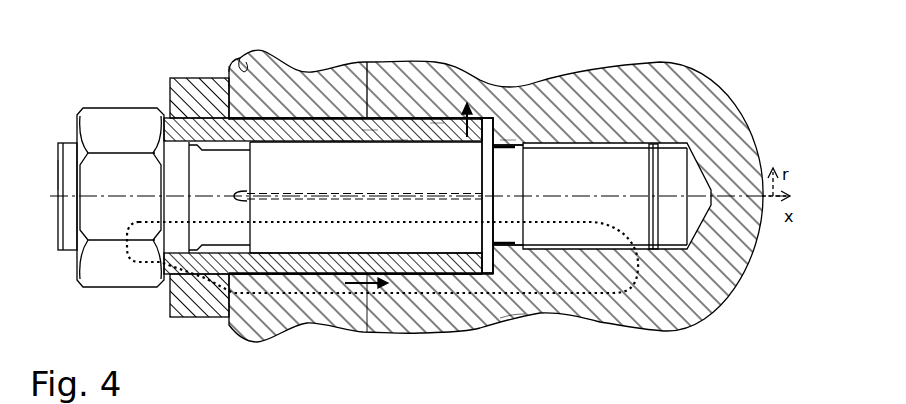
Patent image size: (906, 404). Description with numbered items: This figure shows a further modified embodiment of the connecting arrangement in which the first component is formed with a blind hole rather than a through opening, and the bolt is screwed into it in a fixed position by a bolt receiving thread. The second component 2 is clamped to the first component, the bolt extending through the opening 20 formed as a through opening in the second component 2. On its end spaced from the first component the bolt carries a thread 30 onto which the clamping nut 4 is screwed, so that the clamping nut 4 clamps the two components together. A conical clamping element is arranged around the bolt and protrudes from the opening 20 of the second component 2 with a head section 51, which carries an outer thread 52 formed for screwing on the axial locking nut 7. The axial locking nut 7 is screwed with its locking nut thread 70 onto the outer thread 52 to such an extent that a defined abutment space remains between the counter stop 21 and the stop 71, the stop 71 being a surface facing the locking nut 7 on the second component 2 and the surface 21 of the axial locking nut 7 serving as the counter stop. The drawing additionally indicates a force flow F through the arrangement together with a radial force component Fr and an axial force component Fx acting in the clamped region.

The second component 2 is at (496, 207).
The opening 20 is at (238, 272).
The counter stop 21 is at (229, 323).
The axial locking nut 7 is at (187, 76).
The locking nut thread 70 is at (190, 96).
The stop 71 is at (233, 68).
The clamping nut 4 is at (86, 108).
The thread 30 is at (66, 143).
The outer thread 52 is at (163, 117).
The head section 51 is at (163, 281).
The force flow F is at (566, 297).
The radial force Fr is at (471, 142).
The axial force Fx is at (366, 294).